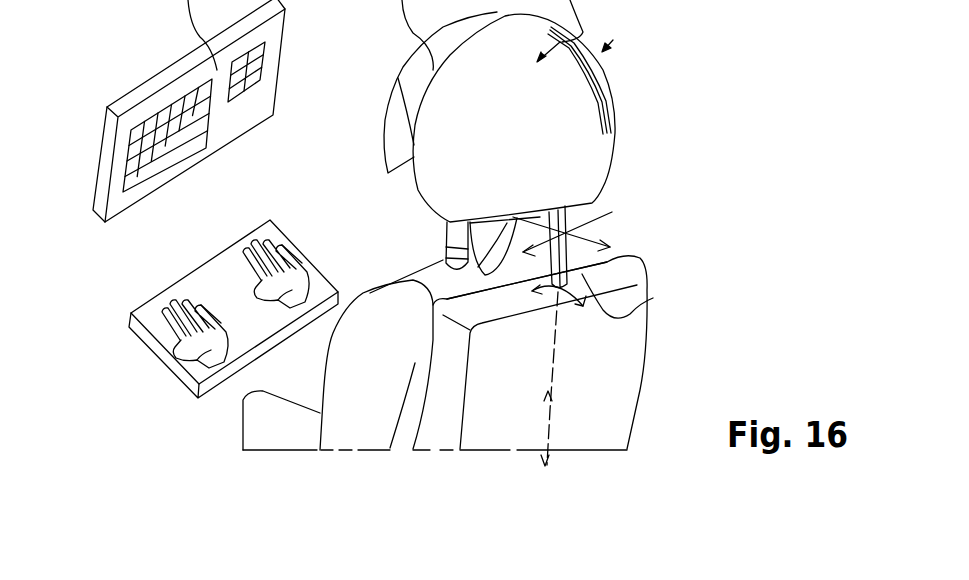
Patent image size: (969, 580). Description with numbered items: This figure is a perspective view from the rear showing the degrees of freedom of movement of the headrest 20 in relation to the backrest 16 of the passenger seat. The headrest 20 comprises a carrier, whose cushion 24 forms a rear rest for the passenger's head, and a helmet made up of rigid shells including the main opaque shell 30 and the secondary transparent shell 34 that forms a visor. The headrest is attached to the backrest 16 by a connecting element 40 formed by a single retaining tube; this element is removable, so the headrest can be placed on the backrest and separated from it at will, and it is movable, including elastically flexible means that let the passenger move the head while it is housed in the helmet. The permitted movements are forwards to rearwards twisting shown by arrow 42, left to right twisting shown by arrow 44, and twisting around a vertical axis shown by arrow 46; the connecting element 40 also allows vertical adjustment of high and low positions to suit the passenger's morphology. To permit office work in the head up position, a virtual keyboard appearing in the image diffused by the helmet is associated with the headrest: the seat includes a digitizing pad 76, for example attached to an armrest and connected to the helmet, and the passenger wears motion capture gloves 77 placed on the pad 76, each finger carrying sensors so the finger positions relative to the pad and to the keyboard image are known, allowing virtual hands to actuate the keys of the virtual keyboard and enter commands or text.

The backrest 16 is at (600, 392).
The headrest 20 is at (613, 40).
The cushion 24 is at (446, 266).
The main opaque shell 30 is at (570, 98).
The secondary transparent shell 34 is at (397, 146).
The connecting element 40 is at (607, 262).
The arrow 42 is at (610, 230).
The arrow 44 is at (591, 203).
The arrow 46 is at (653, 298).
The digitizing pad 76 is at (143, 337).
The motion capture gloves 77 is at (268, 246).